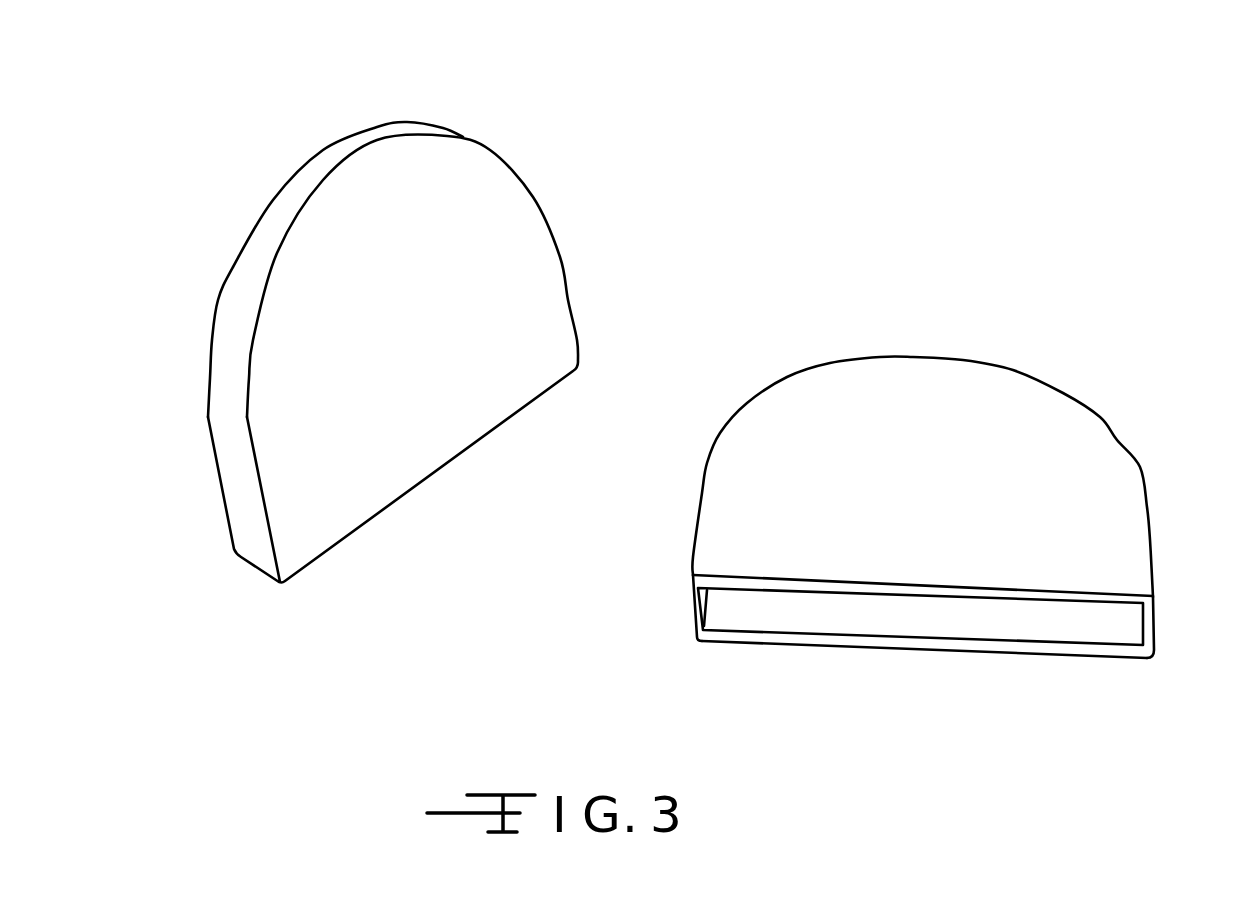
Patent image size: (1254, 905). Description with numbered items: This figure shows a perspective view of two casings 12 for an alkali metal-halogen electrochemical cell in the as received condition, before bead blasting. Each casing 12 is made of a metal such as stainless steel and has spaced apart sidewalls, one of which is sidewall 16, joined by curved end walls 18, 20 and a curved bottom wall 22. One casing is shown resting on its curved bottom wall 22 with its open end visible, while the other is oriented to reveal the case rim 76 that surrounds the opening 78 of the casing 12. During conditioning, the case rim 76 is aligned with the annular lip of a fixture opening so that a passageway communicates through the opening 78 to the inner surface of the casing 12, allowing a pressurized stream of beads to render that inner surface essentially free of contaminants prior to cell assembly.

The casing 12 is at (505, 109).
The sidewall 16 is at (497, 283).
The curved end wall 18 is at (1150, 540).
The curved end wall 20 is at (248, 503).
The curved bottom wall 22 is at (342, 163).
The case rim 76 is at (868, 640).
The opening 78 is at (1109, 628).